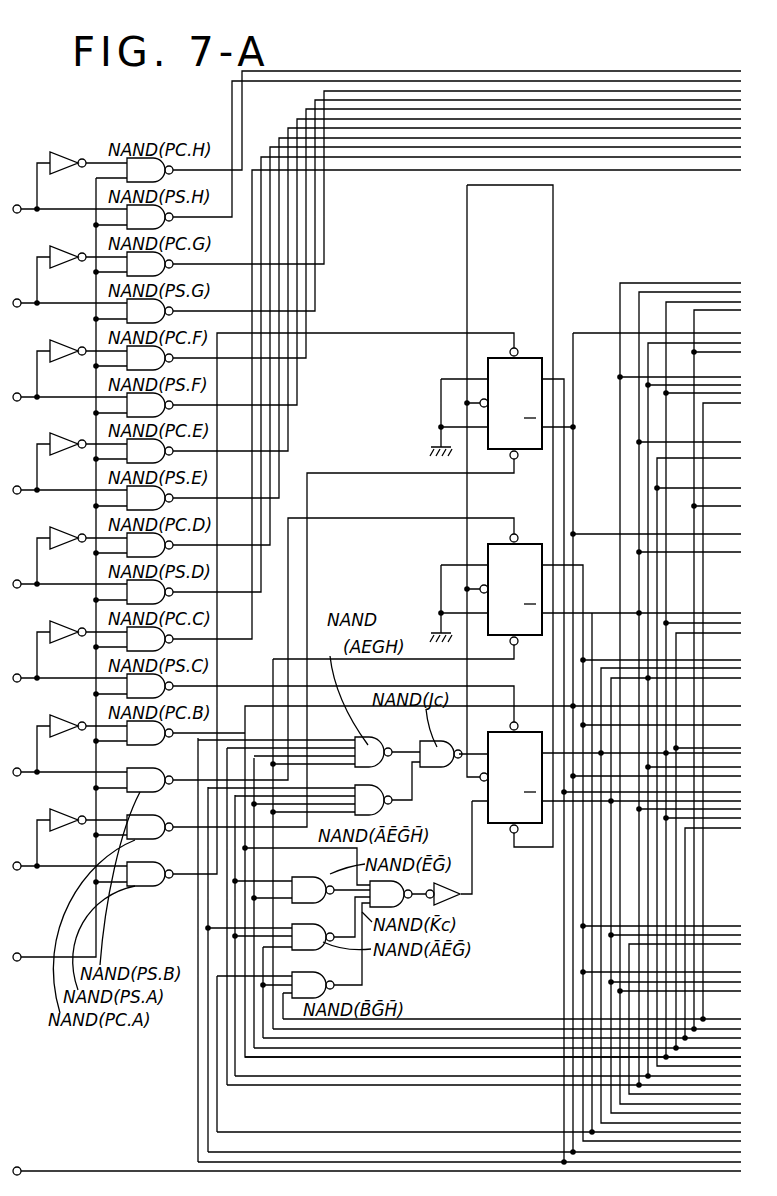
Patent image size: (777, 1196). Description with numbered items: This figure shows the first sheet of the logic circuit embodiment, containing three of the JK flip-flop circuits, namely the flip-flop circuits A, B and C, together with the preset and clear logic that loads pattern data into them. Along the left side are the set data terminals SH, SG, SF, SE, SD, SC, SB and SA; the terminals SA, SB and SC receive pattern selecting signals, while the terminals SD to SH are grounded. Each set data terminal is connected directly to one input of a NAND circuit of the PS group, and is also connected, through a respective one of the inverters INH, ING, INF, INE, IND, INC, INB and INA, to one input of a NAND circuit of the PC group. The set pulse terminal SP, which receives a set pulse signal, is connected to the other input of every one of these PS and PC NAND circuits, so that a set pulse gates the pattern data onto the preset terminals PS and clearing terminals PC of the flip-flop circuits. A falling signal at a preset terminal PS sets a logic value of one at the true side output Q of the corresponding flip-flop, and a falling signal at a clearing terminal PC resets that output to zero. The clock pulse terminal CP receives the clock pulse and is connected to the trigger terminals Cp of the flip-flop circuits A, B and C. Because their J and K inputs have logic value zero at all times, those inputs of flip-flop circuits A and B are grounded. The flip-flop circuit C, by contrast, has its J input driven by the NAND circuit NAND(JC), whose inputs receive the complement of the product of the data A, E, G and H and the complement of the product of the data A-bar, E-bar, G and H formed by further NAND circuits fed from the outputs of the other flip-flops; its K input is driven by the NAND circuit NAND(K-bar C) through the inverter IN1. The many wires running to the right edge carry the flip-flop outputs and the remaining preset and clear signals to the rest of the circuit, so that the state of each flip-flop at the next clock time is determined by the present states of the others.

The flip-flop circuit A is at (503, 362).
The flip-flop circuit B is at (503, 548).
The flip-flop circuit C is at (504, 736).
The inverter IN1 is at (456, 884).
The inverter INH is at (82, 167).
The inverter ING is at (82, 261).
The inverter INF is at (82, 355).
The inverter INE is at (82, 448).
The inverter IND is at (82, 542).
The inverter INC is at (82, 636).
The inverter INB is at (82, 730).
The inverter INA is at (82, 824).
The set data terminal SH is at (69, 221).
The set data terminal SG is at (69, 315).
The set data terminal SF is at (69, 409).
The set data terminal SE is at (69, 502).
The set data terminal SD is at (69, 596).
The set data terminal SC is at (69, 690).
The set data terminal SB is at (69, 784).
The set data terminal SA is at (69, 878).
The set pulse terminal SP is at (54, 580).
The clock pulse terminal CP is at (377, 1158).